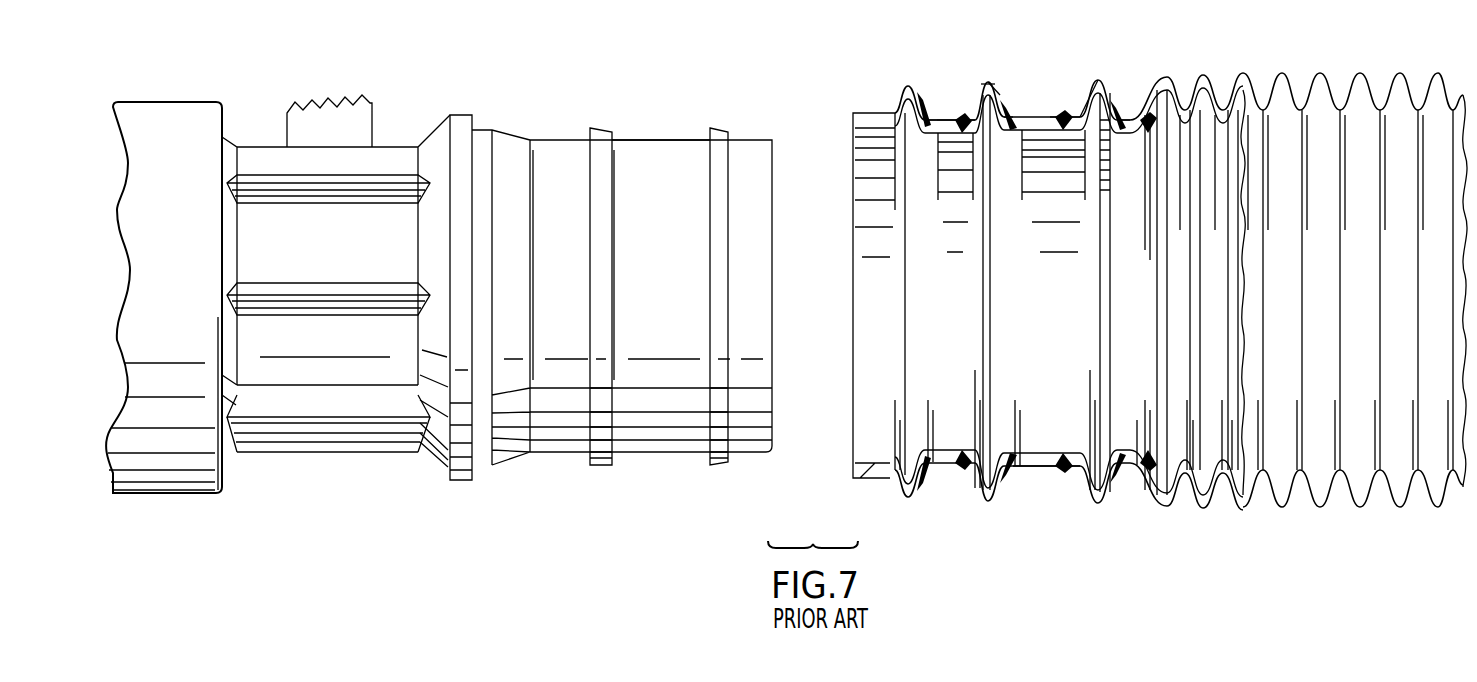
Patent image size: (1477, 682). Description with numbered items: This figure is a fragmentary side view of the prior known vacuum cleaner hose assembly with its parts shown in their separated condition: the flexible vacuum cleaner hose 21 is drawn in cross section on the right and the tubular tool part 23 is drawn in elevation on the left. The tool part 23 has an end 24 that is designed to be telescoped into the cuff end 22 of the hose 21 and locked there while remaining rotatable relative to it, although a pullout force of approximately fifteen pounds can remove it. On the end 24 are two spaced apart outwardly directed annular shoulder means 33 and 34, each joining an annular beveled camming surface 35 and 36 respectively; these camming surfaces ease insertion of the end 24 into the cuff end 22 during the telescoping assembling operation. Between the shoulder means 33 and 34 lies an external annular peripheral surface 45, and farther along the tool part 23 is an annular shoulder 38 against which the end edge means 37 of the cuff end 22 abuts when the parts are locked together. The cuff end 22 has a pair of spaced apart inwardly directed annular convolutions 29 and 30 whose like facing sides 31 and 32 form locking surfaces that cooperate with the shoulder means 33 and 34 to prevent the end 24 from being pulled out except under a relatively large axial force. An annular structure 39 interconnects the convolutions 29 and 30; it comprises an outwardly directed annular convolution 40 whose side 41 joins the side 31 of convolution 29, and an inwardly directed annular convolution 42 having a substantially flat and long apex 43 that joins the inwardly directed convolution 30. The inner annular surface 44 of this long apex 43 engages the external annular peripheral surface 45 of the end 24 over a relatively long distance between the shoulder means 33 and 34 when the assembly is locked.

The flexible vacuum cleaner hose 21 is at (1138, 261).
The cuff end 22 is at (1047, 113).
The tubular tool part 23 is at (172, 102).
The end 24 is at (752, 148).
The annular convolution 29 is at (968, 127).
The annular convolution 30 is at (1083, 127).
The facing side 31 is at (993, 103).
The facing side 32 is at (1127, 110).
The annular shoulder means 33 is at (590, 290).
The annular shoulder means 34 is at (710, 293).
The annular beveled camming surface 35 is at (605, 252).
The annular beveled camming surface 36 is at (722, 256).
The end edge means 37 is at (851, 117).
The annular shoulder 38 is at (473, 122).
The annular structure 39 is at (1010, 110).
The outwardly directed annular convolution 40 is at (982, 97).
The side 41 is at (968, 127).
The inwardly directed annular convolution 42 is at (1058, 117).
The apex 43 is at (1058, 450).
The inner annular surface 44 is at (1040, 447).
The external annular peripheral surface 45 is at (663, 140).